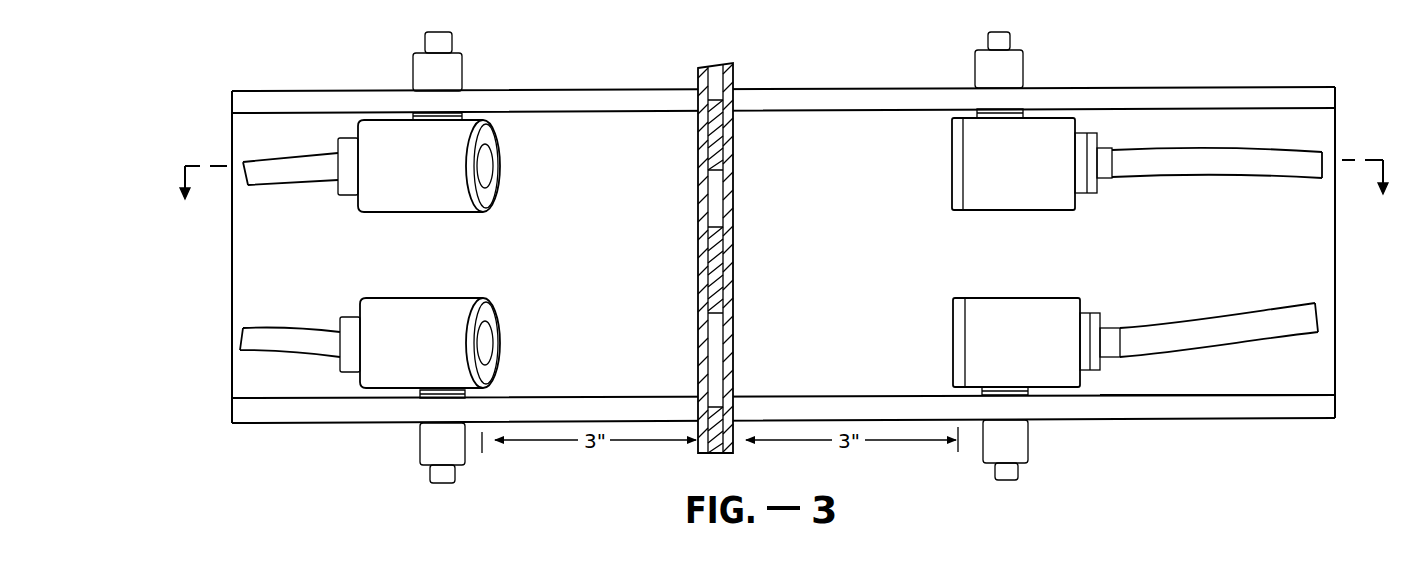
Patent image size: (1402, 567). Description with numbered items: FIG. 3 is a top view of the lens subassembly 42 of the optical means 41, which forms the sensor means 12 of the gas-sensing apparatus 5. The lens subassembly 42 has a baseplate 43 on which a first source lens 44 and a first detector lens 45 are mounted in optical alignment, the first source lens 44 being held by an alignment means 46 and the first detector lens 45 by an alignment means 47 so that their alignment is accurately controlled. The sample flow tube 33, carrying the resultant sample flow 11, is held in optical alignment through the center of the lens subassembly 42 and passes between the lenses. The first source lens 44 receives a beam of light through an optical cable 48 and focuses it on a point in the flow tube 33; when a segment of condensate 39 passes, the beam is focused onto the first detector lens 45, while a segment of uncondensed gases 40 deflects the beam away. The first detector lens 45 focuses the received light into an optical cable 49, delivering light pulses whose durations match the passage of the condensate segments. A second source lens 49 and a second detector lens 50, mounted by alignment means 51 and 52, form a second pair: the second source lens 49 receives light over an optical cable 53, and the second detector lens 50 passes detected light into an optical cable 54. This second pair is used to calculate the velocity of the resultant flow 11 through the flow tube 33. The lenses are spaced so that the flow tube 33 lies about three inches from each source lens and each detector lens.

The apparatus 5 is at (784, 191).
The resultant sample flow 11 is at (712, 258).
The sensor means 12 is at (558, 68).
The sample flow tube 33 is at (733, 163).
The segment of condensate 39 is at (710, 303).
The segment of uncondensed gases 40 is at (713, 198).
The optical means 41 is at (672, 82).
The lens subassembly 42 is at (850, 80).
The baseplate 43 is at (1210, 385).
The first source lens 44 is at (421, 195).
The first detector lens 45 is at (1008, 200).
The alignment means 46 is at (413, 72).
The alignment means 47 is at (1015, 77).
The optical cable 48 is at (281, 172).
The optical cable / second source lens 49 is at (438, 305).
The second detector lens 50 is at (1022, 303).
The alignment means 51 is at (432, 447).
The alignment means 52 is at (988, 448).
The optical cable 53 is at (288, 348).
The optical cable 54 is at (1243, 338).